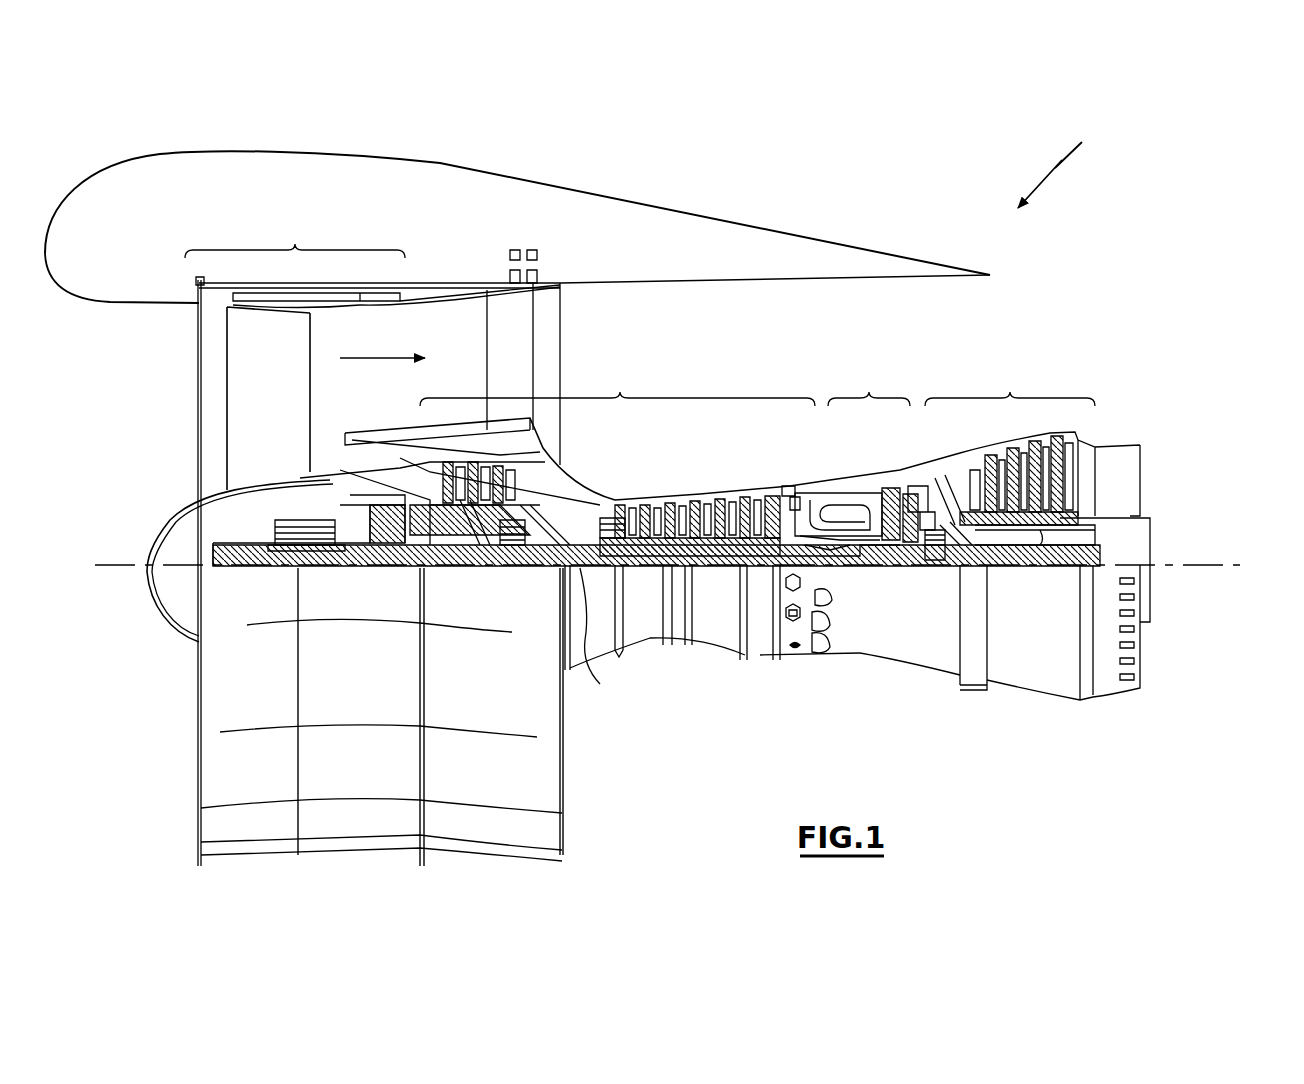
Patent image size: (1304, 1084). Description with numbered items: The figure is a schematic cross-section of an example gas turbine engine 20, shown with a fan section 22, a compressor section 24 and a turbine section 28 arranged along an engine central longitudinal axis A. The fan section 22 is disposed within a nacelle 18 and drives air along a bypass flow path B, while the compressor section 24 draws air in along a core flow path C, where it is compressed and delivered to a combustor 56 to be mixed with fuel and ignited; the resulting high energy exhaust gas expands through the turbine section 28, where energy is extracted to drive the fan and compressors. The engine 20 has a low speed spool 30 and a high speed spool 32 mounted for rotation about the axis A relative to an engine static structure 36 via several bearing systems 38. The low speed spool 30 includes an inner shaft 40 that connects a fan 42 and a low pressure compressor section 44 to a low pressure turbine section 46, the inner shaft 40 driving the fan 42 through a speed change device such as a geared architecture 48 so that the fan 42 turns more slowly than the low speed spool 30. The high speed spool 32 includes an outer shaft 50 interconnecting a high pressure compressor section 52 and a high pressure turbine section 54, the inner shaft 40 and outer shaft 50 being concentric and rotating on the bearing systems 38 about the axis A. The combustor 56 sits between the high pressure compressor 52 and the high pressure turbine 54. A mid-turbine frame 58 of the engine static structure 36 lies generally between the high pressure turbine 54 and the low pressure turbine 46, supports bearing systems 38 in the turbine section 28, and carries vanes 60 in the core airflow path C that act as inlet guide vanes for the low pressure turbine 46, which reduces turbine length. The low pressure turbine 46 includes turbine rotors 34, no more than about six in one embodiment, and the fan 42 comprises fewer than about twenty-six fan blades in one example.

The nacelle 18 is at (508, 197).
The gas turbine engine 20 is at (1067, 170).
The fan section 22 is at (353, 541).
The compressor section 24 is at (630, 431).
The turbine section 28 is at (1037, 531).
The low speed spool 30 is at (716, 575).
The high speed spool 32 is at (762, 500).
The turbine rotors 34 is at (1048, 566).
The engine static structure 36 is at (760, 658).
The bearing systems 38 is at (280, 567).
The inner shaft 40 is at (603, 632).
The fan 42 is at (285, 412).
The low pressure compressor section 44 is at (495, 472).
The low pressure turbine section 46 is at (1030, 470).
The geared architecture 48 is at (385, 560).
The outer shaft 50 is at (840, 568).
The high pressure compressor section 52 is at (693, 522).
The high pressure turbine section 54 is at (900, 490).
The combustor 56 is at (835, 508).
The mid-turbine frame 58 is at (940, 478).
The vanes 60 is at (980, 568).
The engine central longitudinal axis A is at (1218, 565).
The bypass flow path B is at (382, 358).
The core flow path C is at (378, 460).